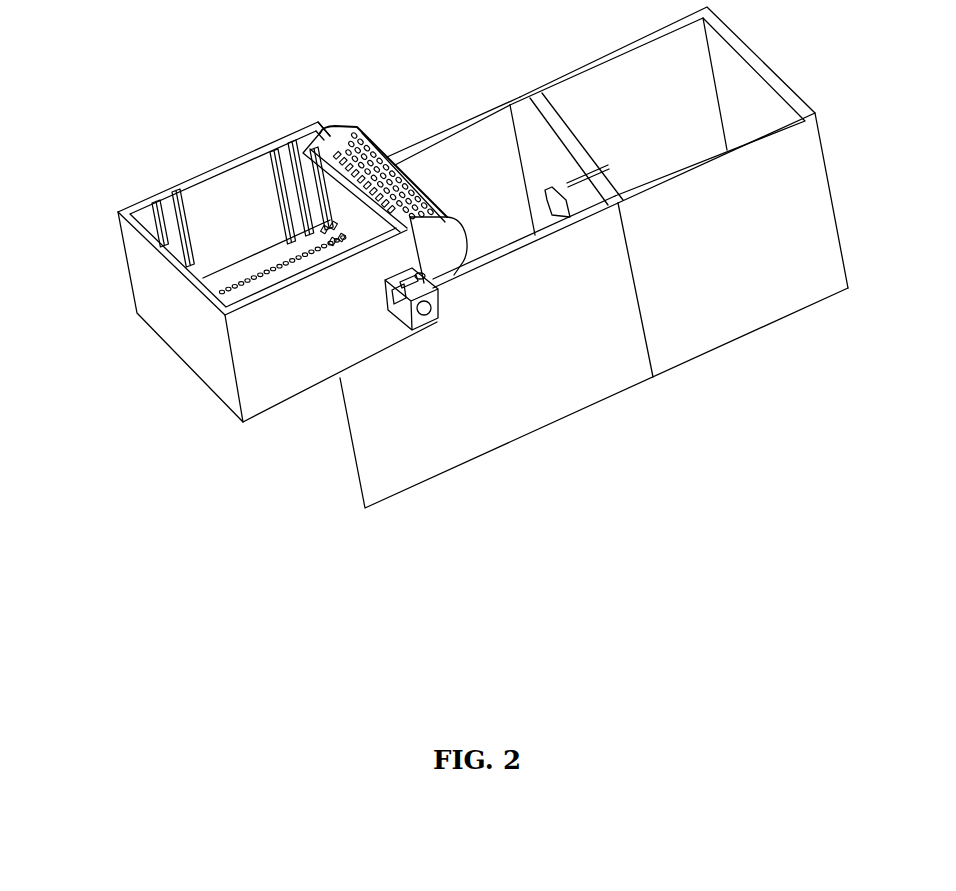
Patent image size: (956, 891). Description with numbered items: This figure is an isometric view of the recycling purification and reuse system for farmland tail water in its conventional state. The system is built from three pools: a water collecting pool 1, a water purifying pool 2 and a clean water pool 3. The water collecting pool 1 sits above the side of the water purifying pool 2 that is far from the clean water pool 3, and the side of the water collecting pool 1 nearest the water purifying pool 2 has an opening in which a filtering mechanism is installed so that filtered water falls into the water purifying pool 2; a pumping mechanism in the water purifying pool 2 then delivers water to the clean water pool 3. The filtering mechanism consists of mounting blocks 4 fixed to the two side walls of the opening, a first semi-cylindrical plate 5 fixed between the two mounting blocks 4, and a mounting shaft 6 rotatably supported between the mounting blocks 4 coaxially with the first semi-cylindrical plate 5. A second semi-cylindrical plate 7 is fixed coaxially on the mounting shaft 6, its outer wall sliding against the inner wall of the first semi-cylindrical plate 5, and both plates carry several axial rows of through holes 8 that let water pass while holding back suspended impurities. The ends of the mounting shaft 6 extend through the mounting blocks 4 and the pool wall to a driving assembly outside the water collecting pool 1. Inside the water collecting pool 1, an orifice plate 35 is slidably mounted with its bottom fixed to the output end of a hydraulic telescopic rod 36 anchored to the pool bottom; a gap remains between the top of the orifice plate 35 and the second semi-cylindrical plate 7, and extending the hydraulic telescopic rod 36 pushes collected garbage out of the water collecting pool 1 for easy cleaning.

The water collecting pool 1 is at (282, 360).
The water purifying pool 2 is at (463, 432).
The clean water pool 3 is at (735, 328).
The mounting block 4 is at (315, 137).
The first semi-cylindrical plate 5 is at (445, 243).
The mounting shaft 6 is at (287, 167).
The second semi-cylindrical plate 7 is at (320, 163).
The through holes 8 is at (360, 137).
The orifice plate 35 is at (257, 270).
The hydraulic telescopic rod 36 is at (157, 205).